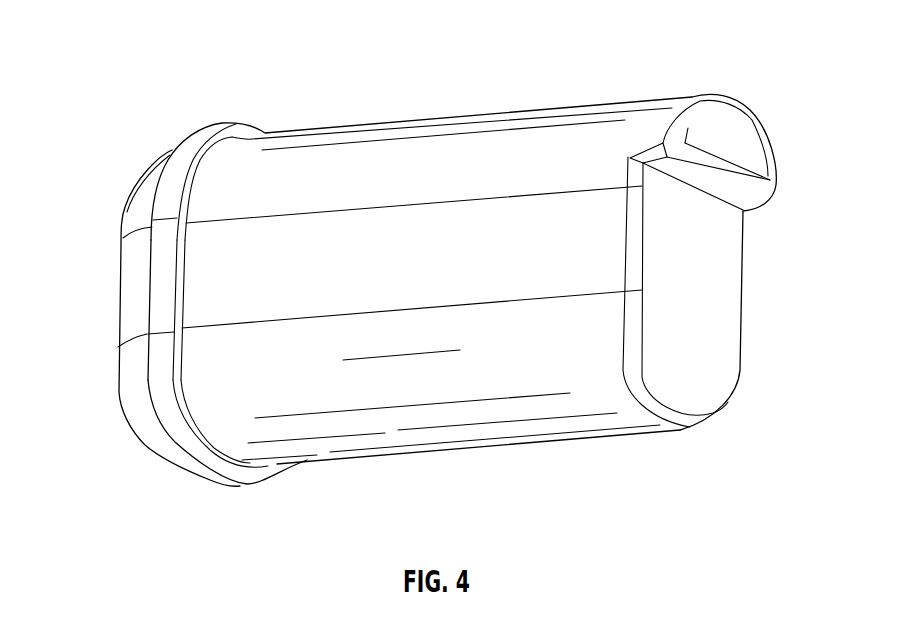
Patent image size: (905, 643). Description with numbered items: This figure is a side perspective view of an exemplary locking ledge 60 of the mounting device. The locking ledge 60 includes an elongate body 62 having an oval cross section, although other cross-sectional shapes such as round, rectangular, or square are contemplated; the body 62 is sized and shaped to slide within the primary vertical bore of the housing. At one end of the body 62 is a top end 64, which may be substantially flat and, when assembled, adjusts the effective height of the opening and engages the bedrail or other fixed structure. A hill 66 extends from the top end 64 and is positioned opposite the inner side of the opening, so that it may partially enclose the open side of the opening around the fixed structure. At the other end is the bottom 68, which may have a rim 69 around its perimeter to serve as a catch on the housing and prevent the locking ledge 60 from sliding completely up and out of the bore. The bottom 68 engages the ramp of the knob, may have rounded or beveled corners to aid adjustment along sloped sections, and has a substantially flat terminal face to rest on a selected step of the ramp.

The locking ledge 60 is at (299, 75).
The body 62 is at (479, 115).
The top end 64 is at (703, 333).
The hill 66 is at (742, 137).
The bottom 68 is at (121, 289).
The rim 69 is at (243, 483).